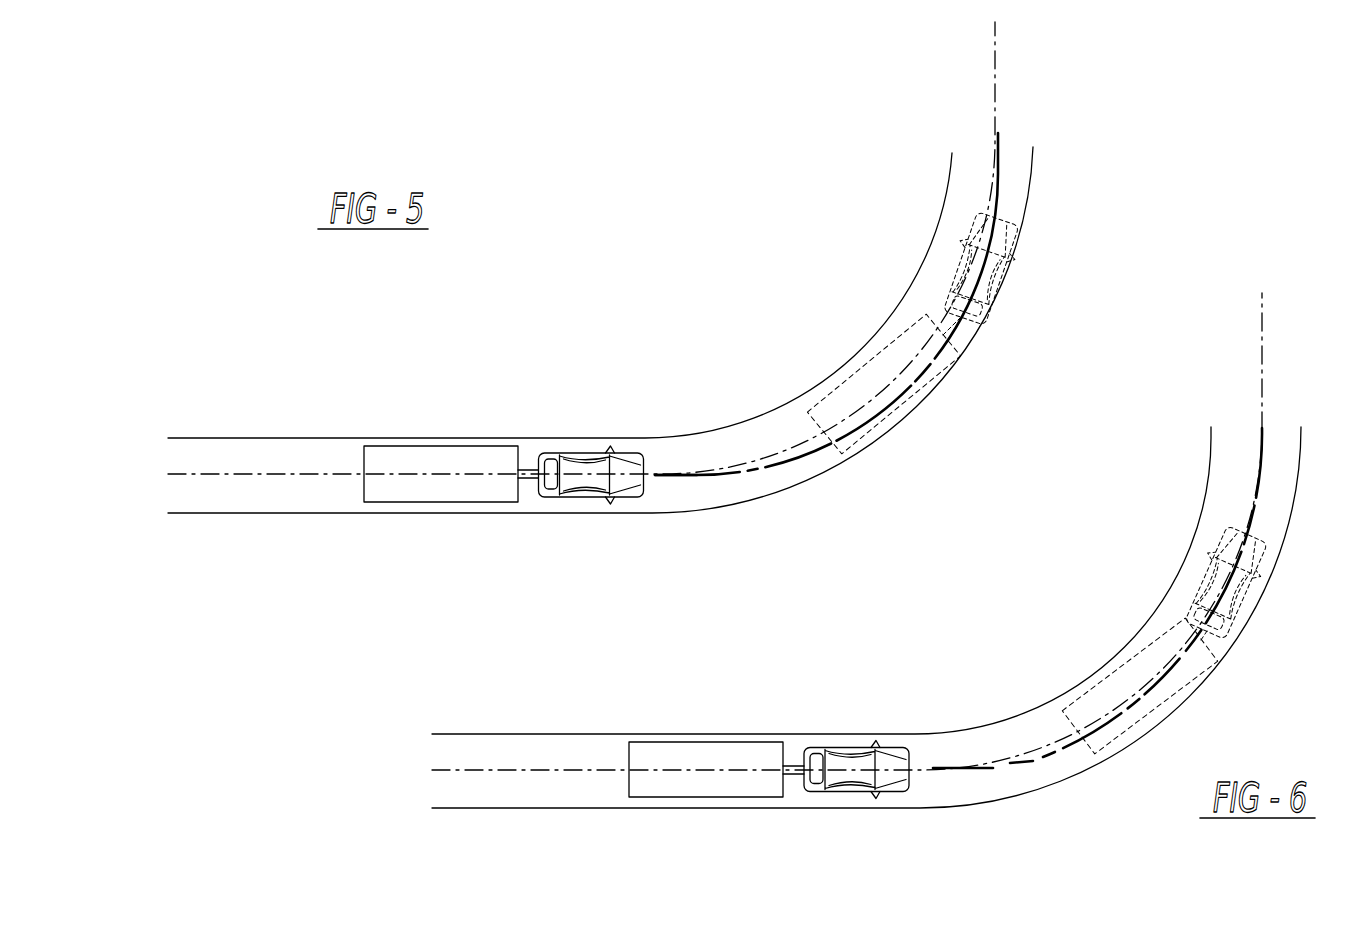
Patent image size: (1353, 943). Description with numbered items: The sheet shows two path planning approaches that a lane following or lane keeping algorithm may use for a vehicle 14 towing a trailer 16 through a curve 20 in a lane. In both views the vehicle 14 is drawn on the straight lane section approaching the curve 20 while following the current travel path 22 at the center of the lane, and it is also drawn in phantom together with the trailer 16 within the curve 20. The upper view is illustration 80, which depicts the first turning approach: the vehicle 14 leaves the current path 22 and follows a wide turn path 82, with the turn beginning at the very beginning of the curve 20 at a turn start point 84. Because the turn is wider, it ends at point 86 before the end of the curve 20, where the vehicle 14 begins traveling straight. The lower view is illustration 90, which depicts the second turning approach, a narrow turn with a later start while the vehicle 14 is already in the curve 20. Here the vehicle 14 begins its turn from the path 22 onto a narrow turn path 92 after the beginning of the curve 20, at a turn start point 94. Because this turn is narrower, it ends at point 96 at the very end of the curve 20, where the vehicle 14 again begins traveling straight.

In FIG. 5, the vehicle 14 is at (583, 467).
In FIG. 6, the vehicle 14 is at (850, 762).
In FIG. 5, the trailer 16 is at (443, 457).
In FIG. 6, the trailer 16 is at (700, 758).
In FIG. 5, the curve 20 is at (913, 277).
In FIG. 6, the curve 20 is at (1027, 708).
In FIG. 5, the travel path 22 is at (292, 476).
In FIG. 6, the travel path 22 is at (507, 770).
In FIG. 5, the illustration 80 is at (761, 287).
In FIG. 5, the wide turn path 82 is at (818, 452).
In FIG. 5, the turn start point 84 is at (672, 475).
In FIG. 5, the point 86 is at (990, 208).
In FIG. 6, the illustration 90 is at (1072, 597).
In FIG. 6, the narrow turn path 92 is at (1045, 757).
In FIG. 6, the turn start point 94 is at (988, 770).
In FIG. 6, the point 96 is at (1262, 427).